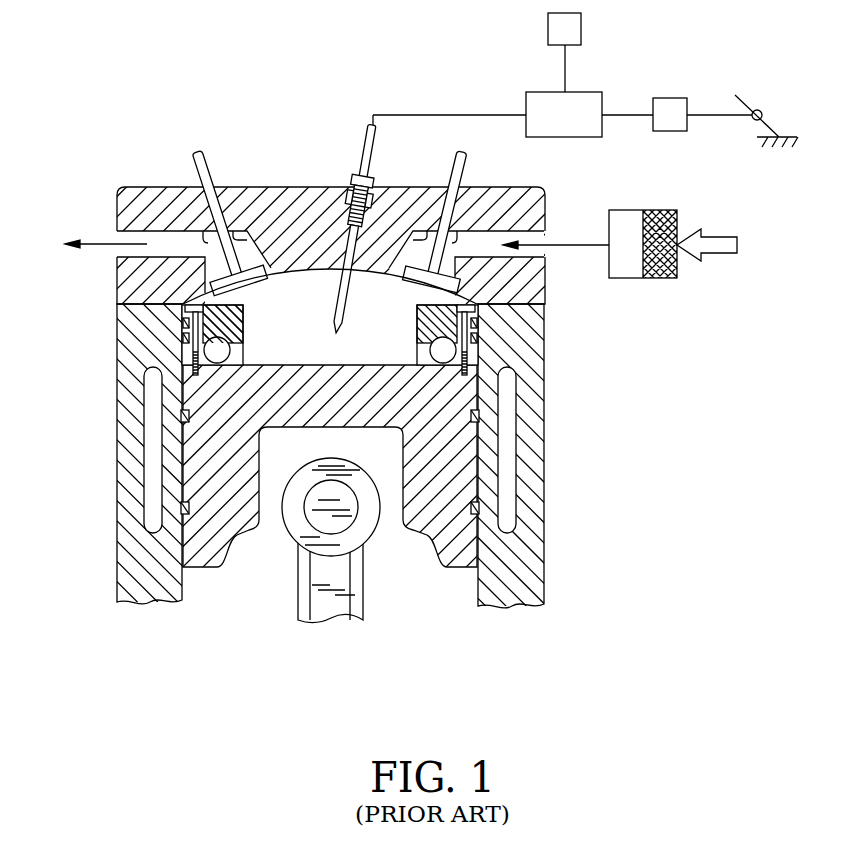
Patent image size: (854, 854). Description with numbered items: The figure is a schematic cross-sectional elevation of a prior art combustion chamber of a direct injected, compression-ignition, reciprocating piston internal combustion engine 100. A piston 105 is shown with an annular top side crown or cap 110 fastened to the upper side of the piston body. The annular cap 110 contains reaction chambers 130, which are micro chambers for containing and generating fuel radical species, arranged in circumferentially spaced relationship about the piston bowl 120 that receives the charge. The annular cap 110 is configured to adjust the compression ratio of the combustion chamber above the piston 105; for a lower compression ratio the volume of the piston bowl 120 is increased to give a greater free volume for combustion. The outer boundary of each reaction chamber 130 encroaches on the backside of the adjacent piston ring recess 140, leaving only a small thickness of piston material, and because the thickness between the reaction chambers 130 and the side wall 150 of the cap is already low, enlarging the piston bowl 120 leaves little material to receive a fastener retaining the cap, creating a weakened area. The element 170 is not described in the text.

The internal combustion engine 100 is at (330, 128).
The piston 105 is at (207, 568).
The annular top side crown or cap 110 is at (423, 326).
The piston bowl 120 is at (314, 310).
The reaction chambers 130 is at (223, 360).
The piston ring recess 140 is at (427, 427).
The side wall 150 is at (518, 367).
The cylinder block 170 is at (427, 427).